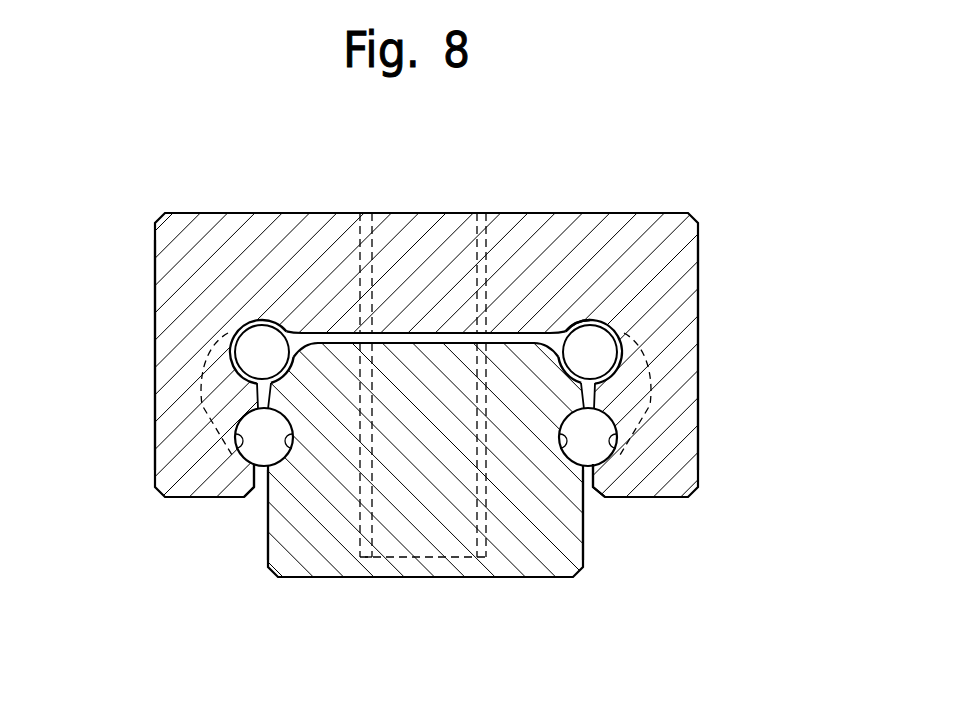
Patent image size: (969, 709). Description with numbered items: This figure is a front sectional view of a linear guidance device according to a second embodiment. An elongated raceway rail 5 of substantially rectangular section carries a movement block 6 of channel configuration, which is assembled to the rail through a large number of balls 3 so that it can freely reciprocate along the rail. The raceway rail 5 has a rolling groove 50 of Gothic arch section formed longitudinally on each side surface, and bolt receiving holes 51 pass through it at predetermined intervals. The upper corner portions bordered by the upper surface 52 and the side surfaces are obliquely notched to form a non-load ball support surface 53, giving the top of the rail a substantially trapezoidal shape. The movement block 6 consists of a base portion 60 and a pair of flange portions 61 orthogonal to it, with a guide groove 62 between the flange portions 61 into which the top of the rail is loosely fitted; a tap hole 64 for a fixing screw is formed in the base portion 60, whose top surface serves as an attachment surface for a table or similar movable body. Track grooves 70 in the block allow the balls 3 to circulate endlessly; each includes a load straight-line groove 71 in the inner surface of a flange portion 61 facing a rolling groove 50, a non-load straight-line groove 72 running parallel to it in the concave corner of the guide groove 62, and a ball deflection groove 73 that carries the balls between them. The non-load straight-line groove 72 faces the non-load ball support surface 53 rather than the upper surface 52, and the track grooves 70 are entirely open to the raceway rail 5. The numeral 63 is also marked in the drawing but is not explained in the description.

The balls 3 is at (262, 441).
The raceway rail 5 is at (527, 585).
The movement block 6 is at (705, 272).
The rolling groove 50 is at (281, 462).
The bolt receiving hole 51 is at (371, 546).
The upper surface 52 is at (451, 339).
The non-load ball support surface 53 is at (276, 350).
The base portion 60 is at (606, 331).
The flange portions 61 is at (152, 403).
The guide groove 62 is at (408, 343).
The retainer upper wall 63 is at (326, 332).
The tap hole 64 is at (478, 262).
The track grooves 70 is at (203, 351).
The load straight-line groove 71 is at (246, 452).
The non-load straight-line groove 72 is at (255, 347).
The ball deflection groove 73 is at (218, 426).